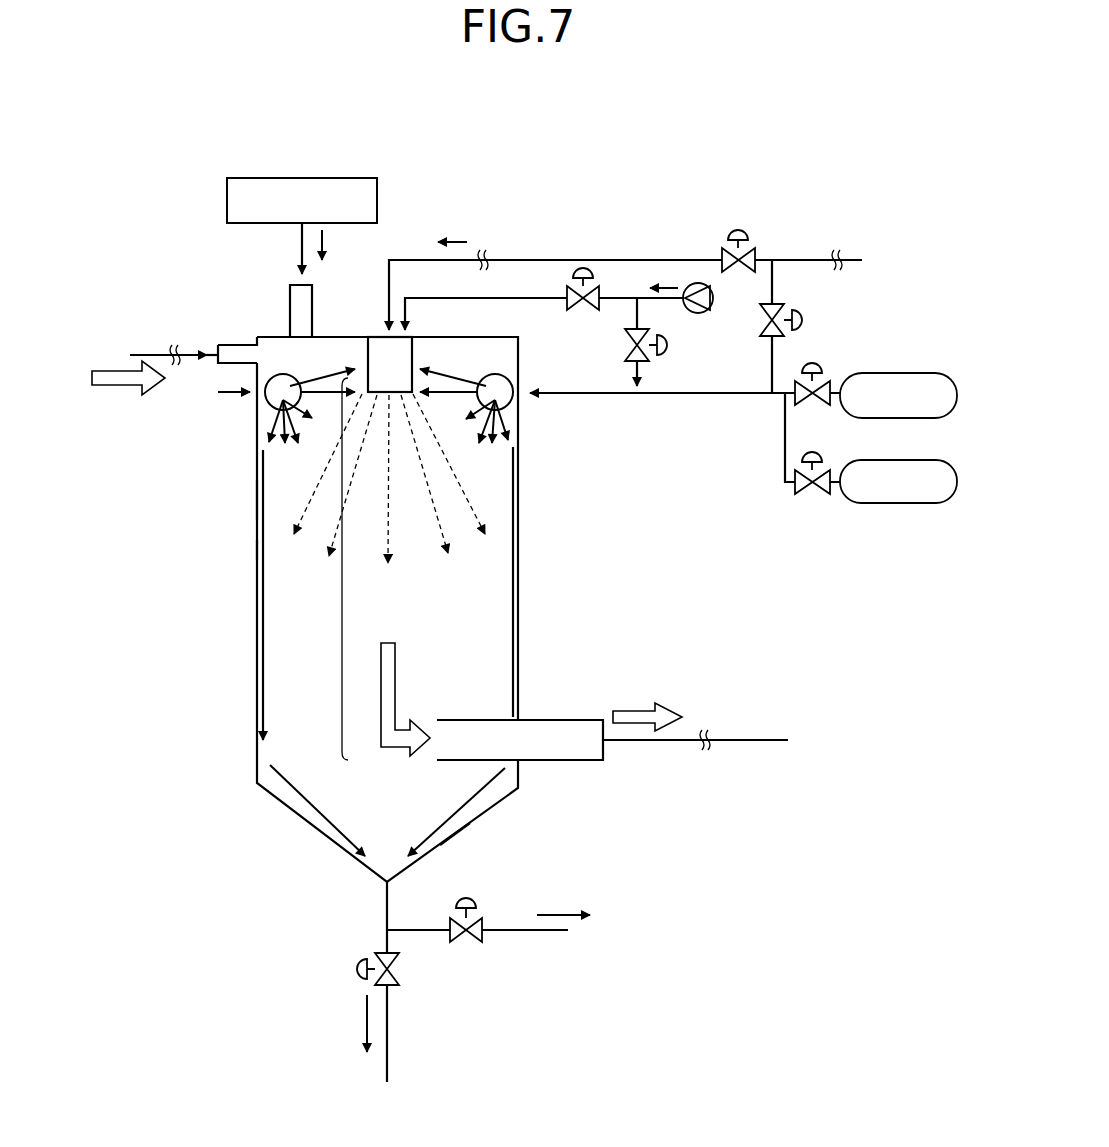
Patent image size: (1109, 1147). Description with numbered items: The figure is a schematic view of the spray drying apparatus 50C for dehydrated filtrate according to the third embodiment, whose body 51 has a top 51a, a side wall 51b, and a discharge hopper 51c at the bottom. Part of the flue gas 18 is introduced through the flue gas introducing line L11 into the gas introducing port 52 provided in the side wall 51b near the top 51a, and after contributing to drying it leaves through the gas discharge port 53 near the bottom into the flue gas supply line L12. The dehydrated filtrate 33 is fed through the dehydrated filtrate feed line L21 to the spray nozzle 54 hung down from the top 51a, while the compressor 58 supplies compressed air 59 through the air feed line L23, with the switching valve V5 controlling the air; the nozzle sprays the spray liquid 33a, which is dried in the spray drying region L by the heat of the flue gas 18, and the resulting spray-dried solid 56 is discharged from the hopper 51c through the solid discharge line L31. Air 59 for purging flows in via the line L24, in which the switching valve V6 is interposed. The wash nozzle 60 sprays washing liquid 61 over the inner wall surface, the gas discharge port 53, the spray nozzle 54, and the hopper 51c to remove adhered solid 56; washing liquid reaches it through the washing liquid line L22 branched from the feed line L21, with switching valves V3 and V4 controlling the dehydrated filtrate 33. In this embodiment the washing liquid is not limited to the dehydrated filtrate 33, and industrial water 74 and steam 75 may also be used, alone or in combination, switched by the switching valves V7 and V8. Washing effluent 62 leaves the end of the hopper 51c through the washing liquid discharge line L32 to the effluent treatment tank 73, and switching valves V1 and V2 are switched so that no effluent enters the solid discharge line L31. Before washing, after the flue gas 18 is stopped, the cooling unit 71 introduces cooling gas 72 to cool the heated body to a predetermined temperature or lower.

The cooling unit 71 is at (305, 178).
The cooling gas 72 is at (322, 243).
The spray nozzle 54 is at (419, 343).
The dehydrated filtrate 33 is at (455, 240).
The spray liquid 33a is at (467, 497).
The gas introducing port 52 is at (232, 342).
The tank body 51 is at (502, 425).
The top 51a is at (359, 337).
The side wall 51b is at (256, 497).
The discharge hopper 51c is at (495, 806).
The spray drying apparatus 50C is at (251, 545).
The flue gas 18 is at (107, 375).
The flue gas introducing line L11 is at (154, 355).
The flue gas supply line L12 is at (750, 738).
The wash nozzle 60 is at (268, 405).
The washing liquid 61 is at (515, 588).
The spray drying region L is at (340, 584).
The gas discharge port 53 is at (570, 718).
The spray-dried solid 56 is at (564, 913).
The compressor 58 is at (714, 306).
The compressed air 59 is at (668, 284).
The washing effluent 62 is at (362, 1015).
The effluent treatment tank 73 is at (385, 1106).
The water (industrial water) 74 is at (915, 373).
The steam 75 is at (915, 460).
The dehydrated filtrate feed line L21 is at (540, 259).
The washing liquid line L22 is at (742, 400).
The air feed line L23 is at (553, 318).
The line L24 is at (642, 385).
The solid discharge line L31 is at (427, 929).
The washing liquid discharge line L32 is at (390, 999).
The switching valve V1 is at (466, 898).
The switching valve V2 is at (354, 966).
The switching valve V3 is at (738, 230).
The switching valve V4 is at (798, 319).
The switching valve V5 is at (590, 312).
The switching valve V6 is at (670, 345).
The switching valve V7 is at (822, 366).
The switching valve V8 is at (818, 496).